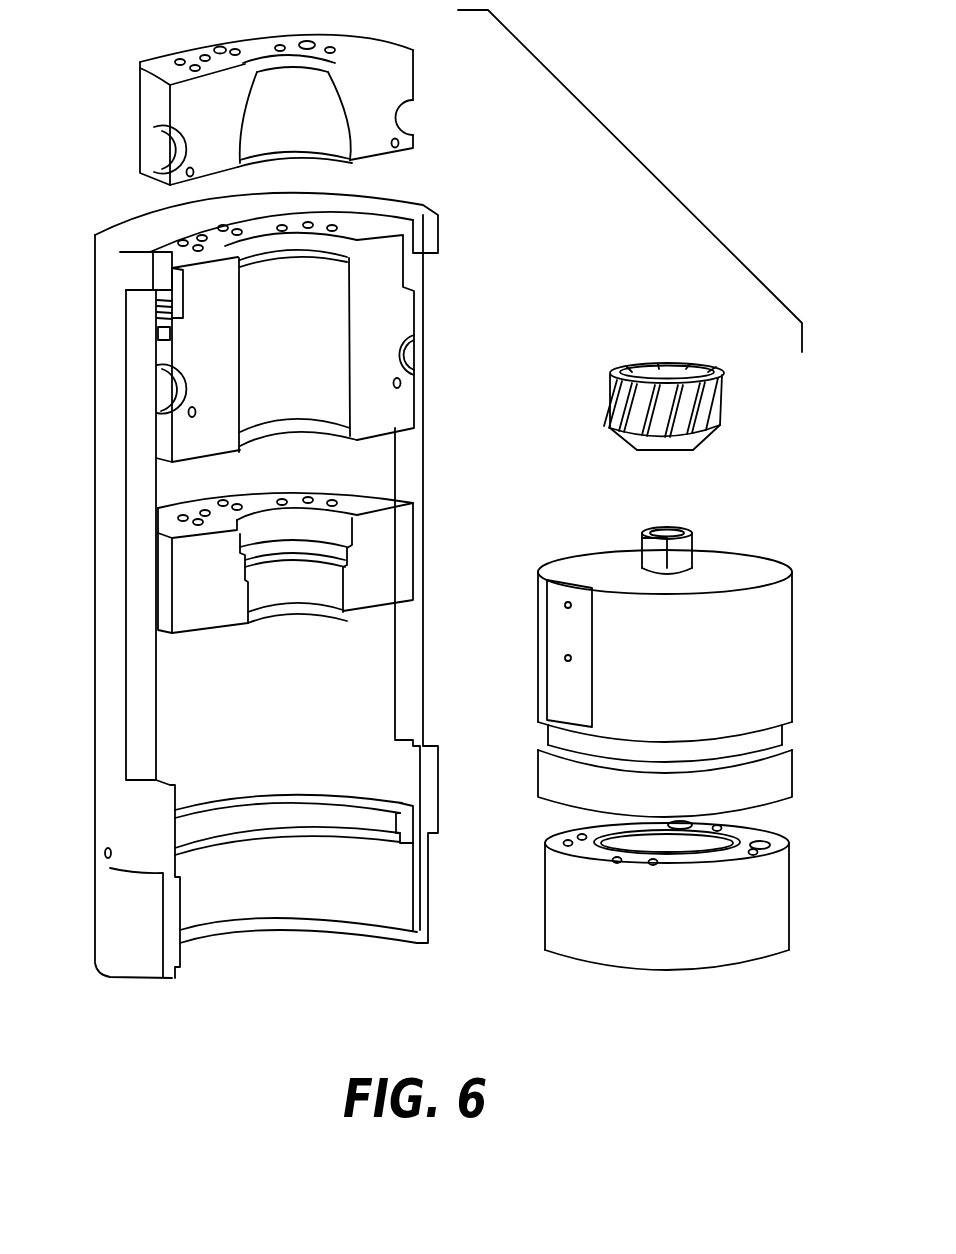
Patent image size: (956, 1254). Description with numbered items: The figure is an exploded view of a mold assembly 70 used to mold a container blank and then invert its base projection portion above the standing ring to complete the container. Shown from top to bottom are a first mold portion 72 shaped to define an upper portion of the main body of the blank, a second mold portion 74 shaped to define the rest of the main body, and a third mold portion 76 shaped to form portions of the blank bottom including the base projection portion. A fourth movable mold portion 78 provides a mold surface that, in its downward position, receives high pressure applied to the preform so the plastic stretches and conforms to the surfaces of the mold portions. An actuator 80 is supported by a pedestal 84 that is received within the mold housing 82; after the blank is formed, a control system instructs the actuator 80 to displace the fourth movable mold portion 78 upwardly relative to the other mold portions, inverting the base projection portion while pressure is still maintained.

The mold assembly 70 is at (632, 152).
The first mold portion 72 is at (145, 94).
The second mold portion 74 is at (190, 343).
The third mold portion 76 is at (190, 597).
The fourth movable mold portion 78 is at (617, 403).
The actuator 80 is at (763, 618).
The mold housing 82 is at (109, 708).
The pedestal 84 is at (571, 917).